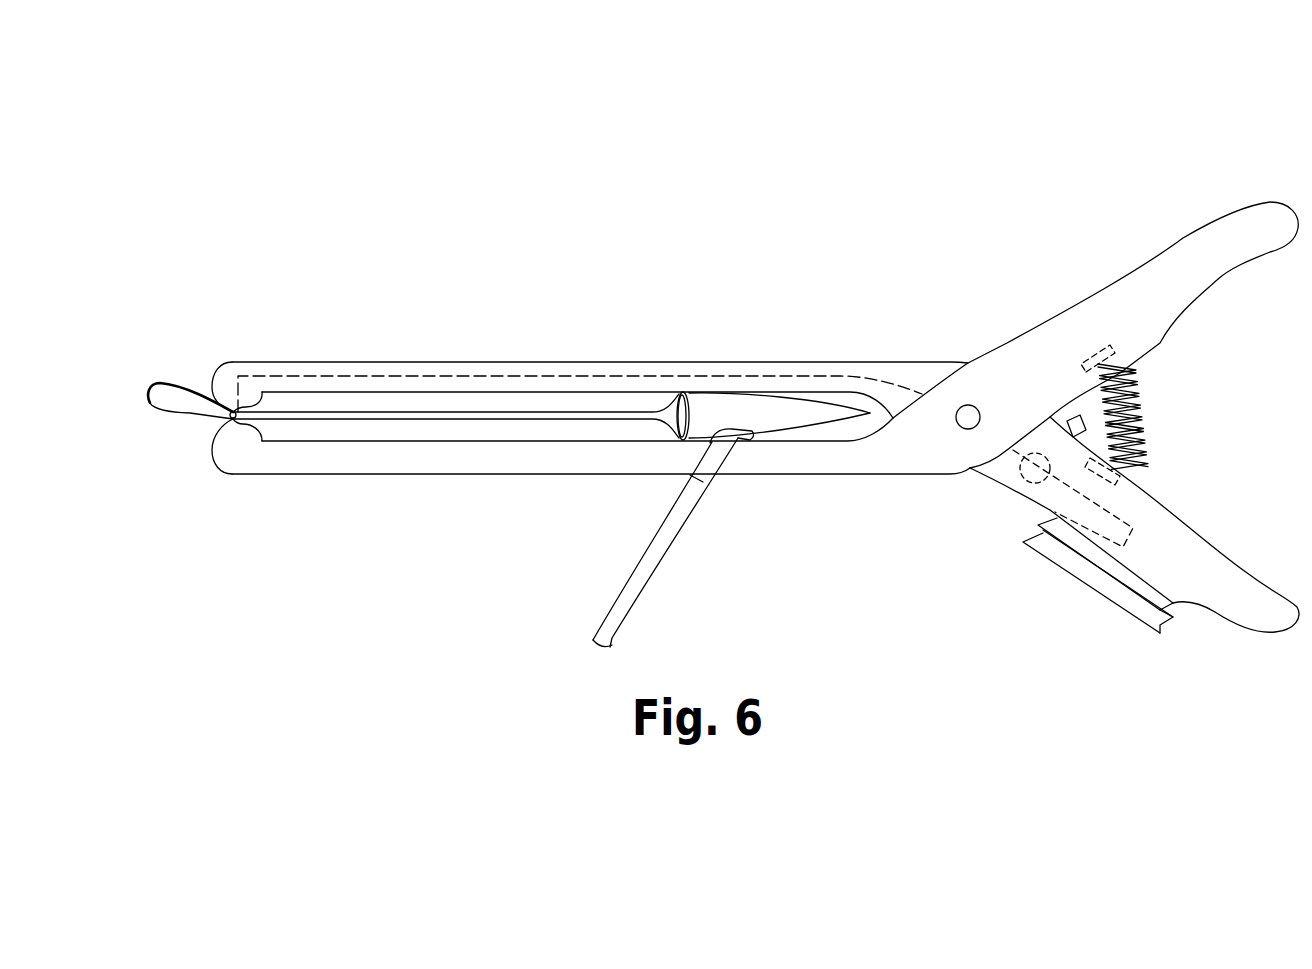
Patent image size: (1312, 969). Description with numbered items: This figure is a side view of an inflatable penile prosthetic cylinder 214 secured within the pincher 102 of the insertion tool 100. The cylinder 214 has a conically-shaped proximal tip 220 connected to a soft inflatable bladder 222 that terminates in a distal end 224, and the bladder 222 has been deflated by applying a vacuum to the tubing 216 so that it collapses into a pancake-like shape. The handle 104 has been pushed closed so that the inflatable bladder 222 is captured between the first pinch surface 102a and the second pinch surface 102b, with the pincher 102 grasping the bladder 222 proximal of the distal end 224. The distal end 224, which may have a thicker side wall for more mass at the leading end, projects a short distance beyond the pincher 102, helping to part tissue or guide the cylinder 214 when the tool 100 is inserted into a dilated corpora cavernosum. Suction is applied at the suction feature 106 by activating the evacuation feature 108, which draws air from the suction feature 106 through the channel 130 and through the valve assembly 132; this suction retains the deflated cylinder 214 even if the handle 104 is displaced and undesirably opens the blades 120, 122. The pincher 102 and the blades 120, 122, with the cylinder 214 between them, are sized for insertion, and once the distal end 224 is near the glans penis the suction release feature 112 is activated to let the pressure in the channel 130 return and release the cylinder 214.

The tool 100 is at (752, 229).
The pincher 102 is at (240, 344).
The first pinch surface 102a is at (258, 404).
The second pinch surface 102b is at (217, 432).
The handle 104 is at (1060, 288).
The suction feature 106 is at (215, 392).
The evacuation feature 108 is at (1050, 555).
The suction release feature 112 is at (1122, 432).
The blade 120 is at (660, 361).
The blade 122 is at (582, 458).
The channel 130 is at (514, 375).
The valve assembly 132 is at (1020, 472).
The cylinder 214 is at (383, 400).
The tubing 216 is at (633, 572).
The proximal tip 220 is at (797, 420).
The inflatable bladder 222 is at (437, 420).
The distal end 224 is at (165, 390).